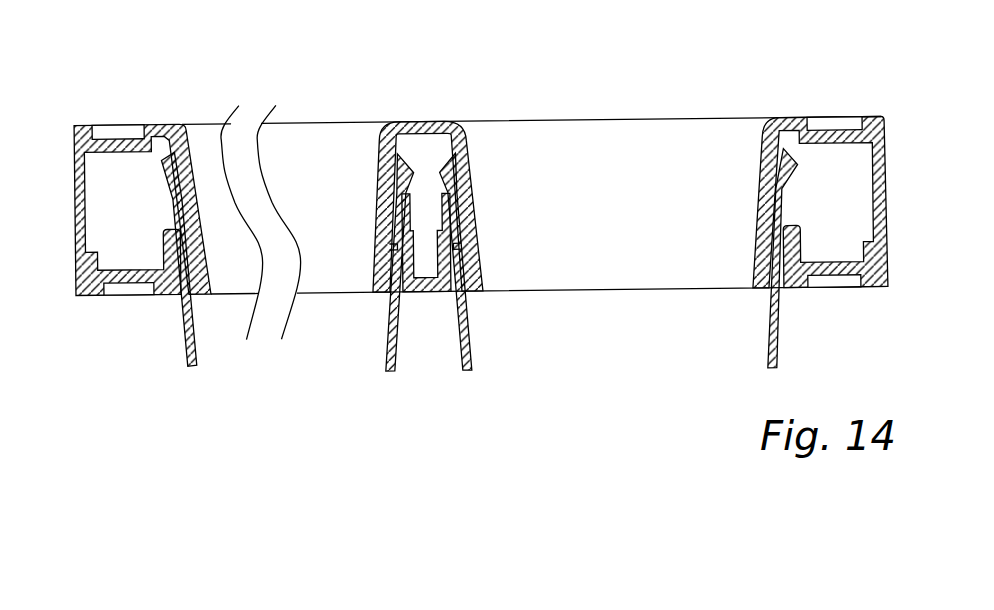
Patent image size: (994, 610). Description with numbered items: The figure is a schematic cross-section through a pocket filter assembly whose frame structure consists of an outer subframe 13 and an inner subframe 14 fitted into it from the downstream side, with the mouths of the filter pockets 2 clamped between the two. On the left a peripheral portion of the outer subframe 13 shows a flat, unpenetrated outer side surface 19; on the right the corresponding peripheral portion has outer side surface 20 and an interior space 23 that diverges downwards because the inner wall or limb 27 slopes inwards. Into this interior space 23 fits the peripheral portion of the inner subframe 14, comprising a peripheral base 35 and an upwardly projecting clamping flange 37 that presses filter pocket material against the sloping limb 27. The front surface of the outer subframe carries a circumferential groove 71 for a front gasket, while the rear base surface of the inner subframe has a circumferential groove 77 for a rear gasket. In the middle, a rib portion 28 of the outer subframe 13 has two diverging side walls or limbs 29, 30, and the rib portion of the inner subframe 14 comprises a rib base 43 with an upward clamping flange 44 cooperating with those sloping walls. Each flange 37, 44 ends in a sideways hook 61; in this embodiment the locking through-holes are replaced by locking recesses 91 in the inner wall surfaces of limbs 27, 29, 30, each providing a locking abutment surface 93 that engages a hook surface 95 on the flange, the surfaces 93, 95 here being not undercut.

The outer subframe 13 is at (186, 119).
The outer side surface 19 is at (77, 215).
The inner subframe 14 is at (154, 304).
The filter pocket 2 is at (183, 347).
The cap member 28 is at (423, 145).
The side wall or limb 29 is at (378, 160).
The side wall or limb 30 is at (473, 183).
The rib base 43 is at (424, 293).
The clamping flange 44 is at (387, 296).
The hook 61 is at (403, 208).
The hook surface 95 is at (398, 232).
The locking abutment surface 93 is at (389, 246).
The locking recess 91 is at (468, 243).
The interior space 23 is at (862, 155).
The circumferential groove 71 is at (828, 125).
The circumferential groove 77 is at (843, 282).
The outer side surface 20 is at (883, 190).
The inner wall or limb 27 is at (763, 173).
The clamping flange 37 is at (800, 250).
The peripheral base 35 is at (798, 292).